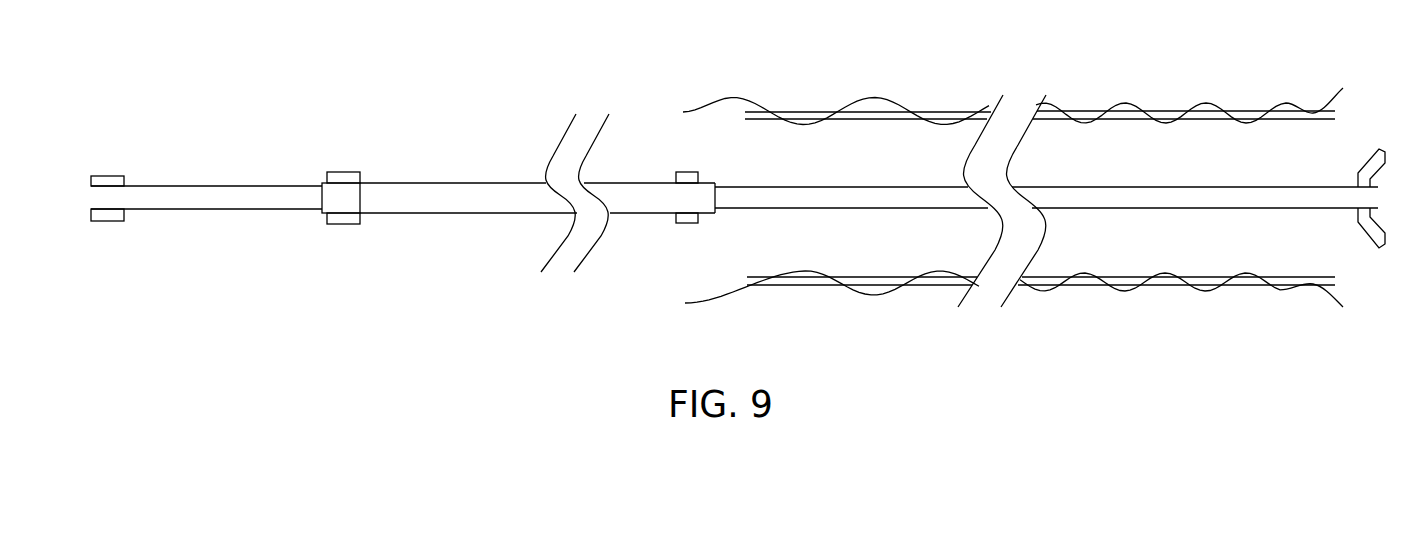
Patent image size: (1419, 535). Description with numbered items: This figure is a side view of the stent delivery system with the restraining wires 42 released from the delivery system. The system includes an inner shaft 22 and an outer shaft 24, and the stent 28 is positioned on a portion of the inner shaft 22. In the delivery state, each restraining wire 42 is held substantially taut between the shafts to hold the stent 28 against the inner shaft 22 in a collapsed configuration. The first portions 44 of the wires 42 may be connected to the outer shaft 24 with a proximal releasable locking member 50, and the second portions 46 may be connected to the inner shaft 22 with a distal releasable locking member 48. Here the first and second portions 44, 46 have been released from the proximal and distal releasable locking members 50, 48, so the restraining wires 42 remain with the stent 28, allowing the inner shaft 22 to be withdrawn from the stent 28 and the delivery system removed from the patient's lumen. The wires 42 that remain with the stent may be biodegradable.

The inner shaft 22 is at (1305, 210).
The outer shaft 24 is at (640, 214).
The stent 28 is at (1163, 111).
The restraining wire 42 is at (893, 100).
The first portion 44 is at (717, 99).
The second portion 46 is at (1335, 295).
The distal releasable locking member 48 is at (1372, 163).
The proximal releasable locking member 50 is at (688, 172).